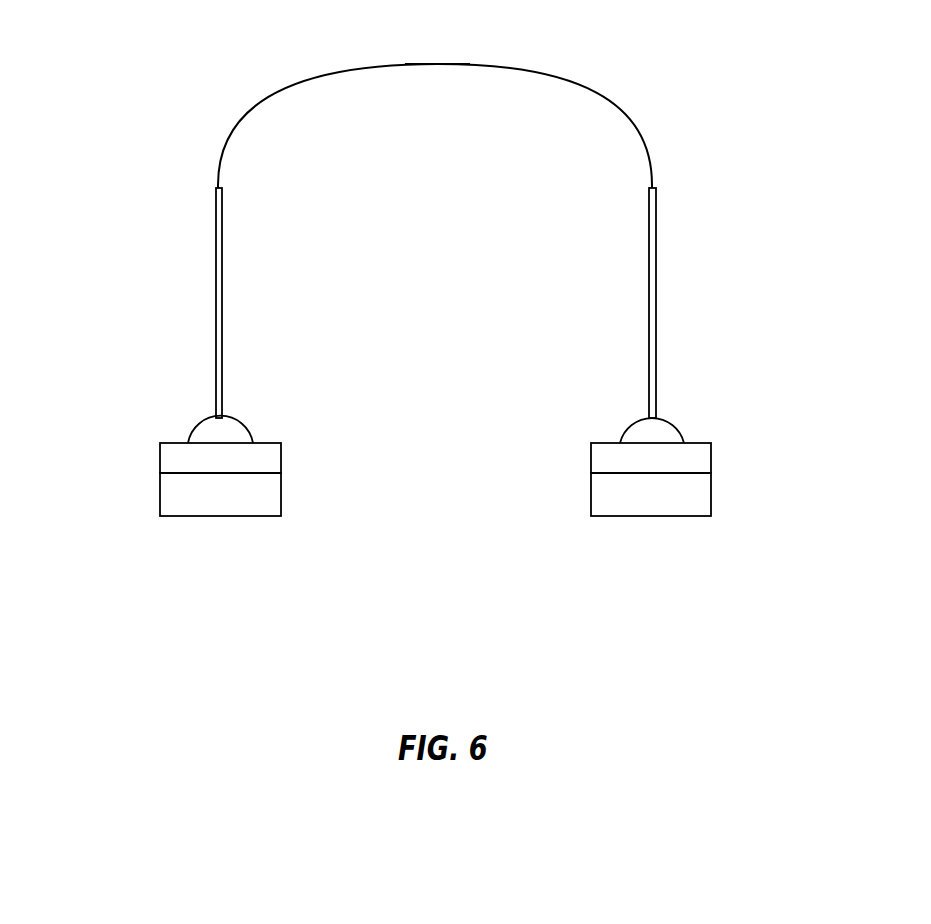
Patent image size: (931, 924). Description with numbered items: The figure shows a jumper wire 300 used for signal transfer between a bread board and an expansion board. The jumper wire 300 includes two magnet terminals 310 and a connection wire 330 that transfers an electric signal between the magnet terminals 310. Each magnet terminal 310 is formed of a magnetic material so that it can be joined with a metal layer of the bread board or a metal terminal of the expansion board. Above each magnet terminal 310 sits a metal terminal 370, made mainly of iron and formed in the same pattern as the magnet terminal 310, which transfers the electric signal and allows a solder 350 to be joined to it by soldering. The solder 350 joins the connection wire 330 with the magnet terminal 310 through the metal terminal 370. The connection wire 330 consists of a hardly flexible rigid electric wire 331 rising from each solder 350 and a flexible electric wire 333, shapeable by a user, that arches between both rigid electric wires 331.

The jumper wire 300 is at (457, 585).
The magnet terminal 310 is at (268, 497).
The connection wire 330 is at (460, 152).
The rigid electric wire 331 is at (215, 285).
The flexible electric wire 333 is at (410, 64).
The solder 350 is at (230, 427).
The metal terminal 370 is at (168, 457).